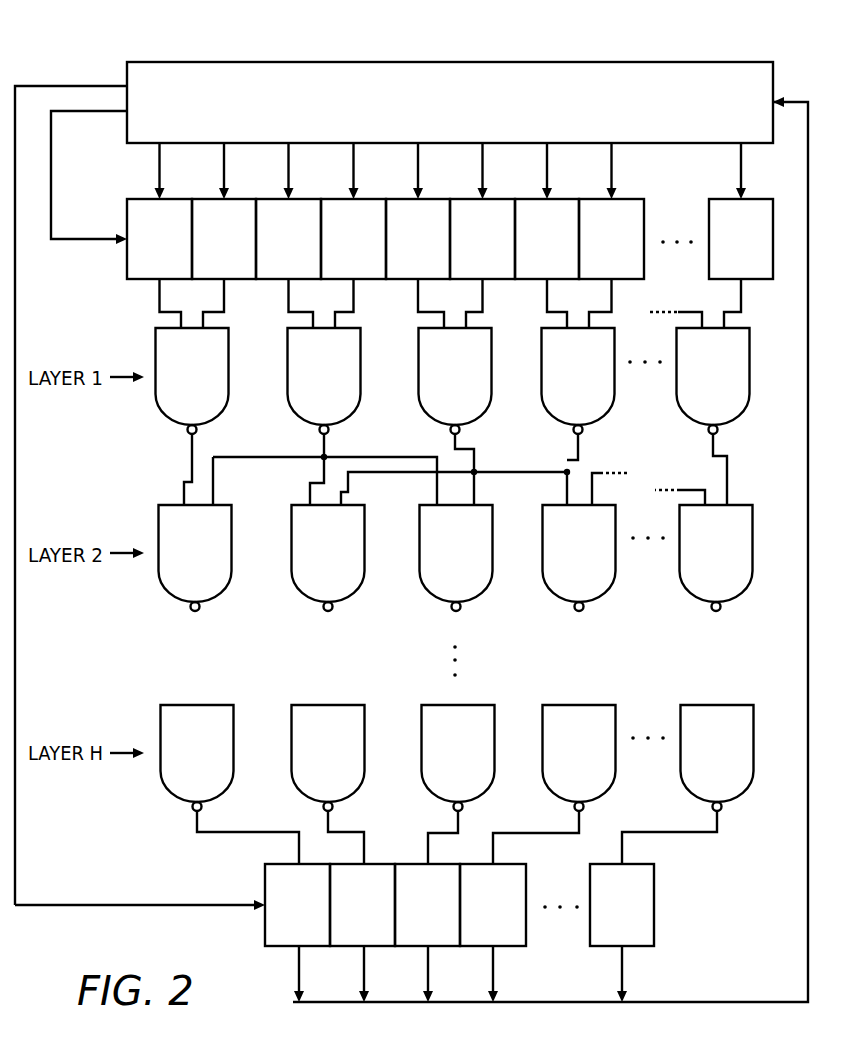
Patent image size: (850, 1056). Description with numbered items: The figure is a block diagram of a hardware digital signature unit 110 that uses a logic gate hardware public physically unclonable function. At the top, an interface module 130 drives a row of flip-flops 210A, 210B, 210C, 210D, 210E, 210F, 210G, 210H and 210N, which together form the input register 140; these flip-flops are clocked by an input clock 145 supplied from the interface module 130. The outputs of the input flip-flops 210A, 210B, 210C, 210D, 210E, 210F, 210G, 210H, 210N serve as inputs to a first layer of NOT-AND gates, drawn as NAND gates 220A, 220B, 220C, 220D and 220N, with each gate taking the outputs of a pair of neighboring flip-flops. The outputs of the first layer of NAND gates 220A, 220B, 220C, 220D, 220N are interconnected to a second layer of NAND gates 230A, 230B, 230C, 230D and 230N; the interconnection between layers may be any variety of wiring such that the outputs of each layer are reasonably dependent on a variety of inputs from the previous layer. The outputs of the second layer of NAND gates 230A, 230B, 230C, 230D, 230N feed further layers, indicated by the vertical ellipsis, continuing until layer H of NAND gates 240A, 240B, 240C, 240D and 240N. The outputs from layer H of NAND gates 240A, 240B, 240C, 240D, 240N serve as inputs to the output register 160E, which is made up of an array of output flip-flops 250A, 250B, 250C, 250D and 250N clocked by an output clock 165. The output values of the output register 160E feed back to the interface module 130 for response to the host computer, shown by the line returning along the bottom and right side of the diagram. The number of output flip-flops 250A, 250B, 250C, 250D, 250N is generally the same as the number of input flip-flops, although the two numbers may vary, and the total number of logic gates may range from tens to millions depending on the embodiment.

The hardware digital signature unit 110 is at (50, 34).
The interface module 130 is at (436, 125).
The input register 140 is at (465, 263).
The input clock 145 is at (51, 150).
The output clock 165 is at (15, 870).
The output register 160E is at (497, 933).
The flip-flop 210A is at (180, 262).
The flip-flop 210B is at (204, 262).
The flip-flop 210C is at (268, 262).
The flip-flop 210D is at (374, 262).
The flip-flop 210E is at (398, 262).
The flip-flop 210F is at (462, 262).
The flip-flop 210G is at (527, 262).
The flip-flop 210H is at (632, 262).
The flip-flop 210N is at (721, 262).
The first layer NAND gate 220A is at (171, 408).
The first layer NAND gate 220B is at (303, 408).
The first layer NAND gate 220C is at (434, 408).
The first layer NAND gate 220D is at (557, 408).
The first layer NAND gate 220N is at (692, 408).
The second layer NAND gate 230A is at (174, 586).
The second layer NAND gate 230B is at (307, 586).
The second layer NAND gate 230C is at (435, 586).
The second layer NAND gate 230D is at (558, 586).
The second layer NAND gate 230N is at (695, 586).
The layer H NAND gate 240A is at (176, 786).
The layer H NAND gate 240B is at (307, 786).
The layer H NAND gate 240C is at (437, 786).
The layer H NAND gate 240D is at (558, 786).
The layer H NAND gate 240N is at (696, 786).
The output flip-flop 250A is at (318, 930).
The output flip-flop 250B is at (342, 930).
The output flip-flop 250C is at (448, 930).
The output flip-flop 250D is at (473, 930).
The output flip-flop 250N is at (602, 930).